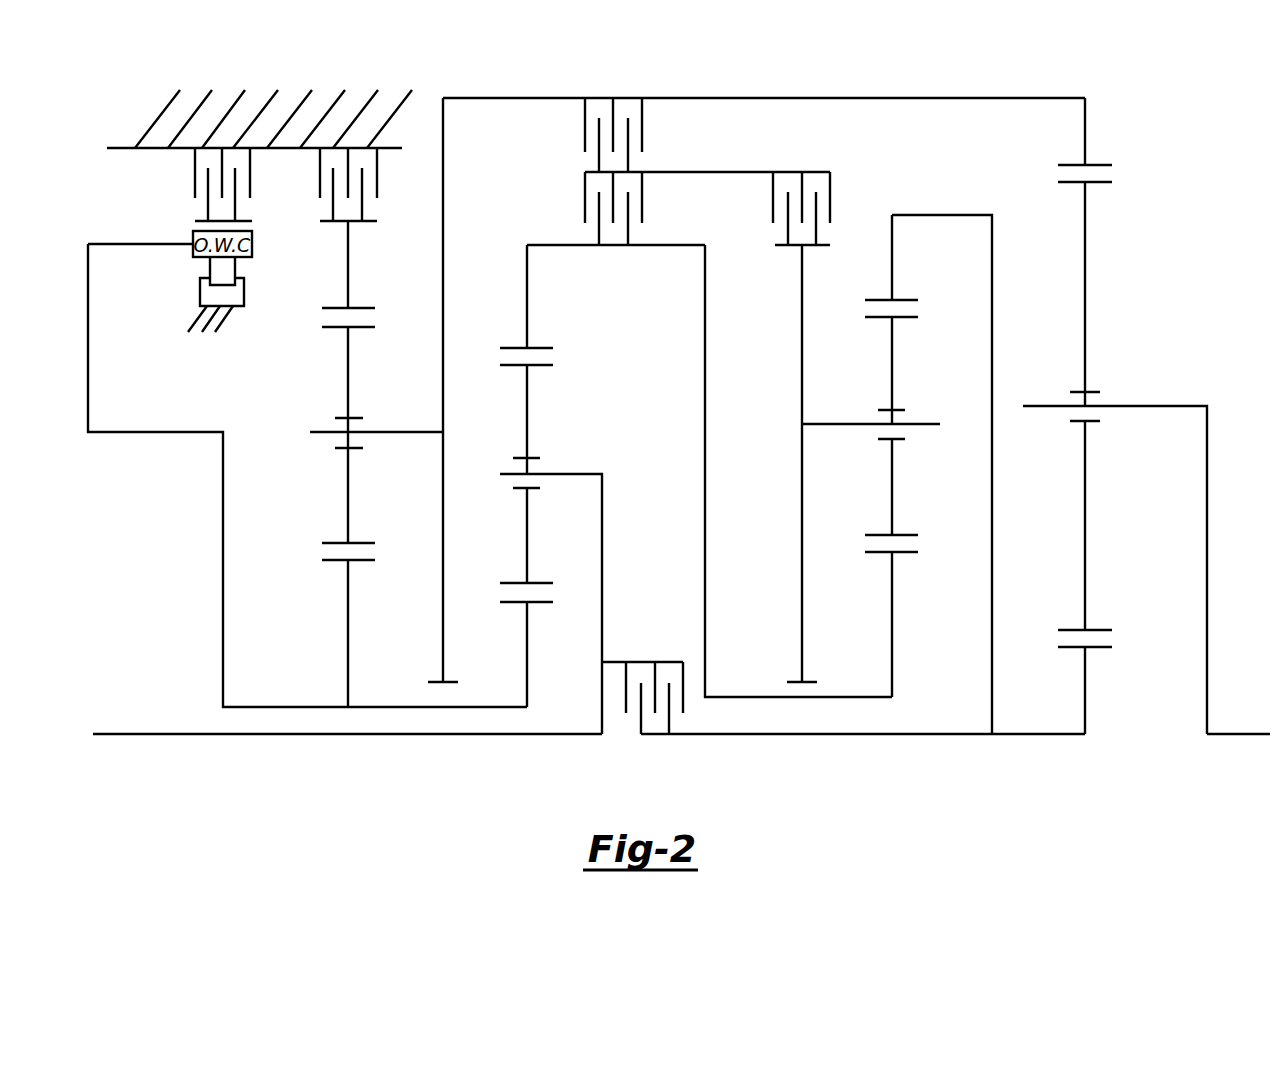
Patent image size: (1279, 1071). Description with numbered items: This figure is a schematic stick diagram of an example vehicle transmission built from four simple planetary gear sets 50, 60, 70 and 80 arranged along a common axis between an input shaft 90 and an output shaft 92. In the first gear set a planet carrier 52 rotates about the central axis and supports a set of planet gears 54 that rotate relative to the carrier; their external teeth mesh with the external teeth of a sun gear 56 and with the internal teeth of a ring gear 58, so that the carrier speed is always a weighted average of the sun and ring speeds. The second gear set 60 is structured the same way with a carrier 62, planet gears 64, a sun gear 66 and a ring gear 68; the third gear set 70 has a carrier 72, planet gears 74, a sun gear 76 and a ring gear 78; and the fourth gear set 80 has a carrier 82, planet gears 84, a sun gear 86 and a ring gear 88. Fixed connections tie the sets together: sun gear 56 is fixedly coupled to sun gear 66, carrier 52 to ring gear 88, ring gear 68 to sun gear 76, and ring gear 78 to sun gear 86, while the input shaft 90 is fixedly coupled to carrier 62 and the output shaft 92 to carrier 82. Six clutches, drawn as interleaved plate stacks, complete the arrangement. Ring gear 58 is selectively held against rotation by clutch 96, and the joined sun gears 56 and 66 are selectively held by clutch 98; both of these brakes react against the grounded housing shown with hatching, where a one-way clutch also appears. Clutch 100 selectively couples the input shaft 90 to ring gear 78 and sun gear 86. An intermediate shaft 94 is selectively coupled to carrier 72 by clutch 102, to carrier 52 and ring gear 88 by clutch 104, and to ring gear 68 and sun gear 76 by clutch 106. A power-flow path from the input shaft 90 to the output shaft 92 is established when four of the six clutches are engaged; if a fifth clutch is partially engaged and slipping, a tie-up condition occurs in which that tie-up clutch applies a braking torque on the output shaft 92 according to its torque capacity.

The planetary gear set 50 is at (333, 790).
The planet carrier 52 is at (443, 258).
The planet gears 54 is at (348, 372).
The sun gear 56 is at (348, 633).
The ring gear 58 is at (348, 264).
The planetary gear set 60 is at (515, 790).
The carrier 62 is at (602, 550).
The planet gears 64 is at (527, 412).
The sun gear 66 is at (527, 655).
The ring gear 68 is at (527, 297).
The planetary gear set 70 is at (878, 790).
The carrier 72 is at (802, 403).
The planet gears 74 is at (892, 363).
The sun gear 76 is at (892, 625).
The ring gear 78 is at (892, 258).
The planetary gear set 80 is at (1071, 790).
The carrier 82 is at (1158, 406).
The planet gears 84 is at (1085, 288).
The sun gear 86 is at (1085, 692).
The ring gear 88 is at (1085, 132).
The input shaft 90 is at (155, 735).
The output shaft 92 is at (1250, 735).
The intermediate shaft 94 is at (708, 172).
The clutch 96 is at (320, 174).
The clutch 98 is at (195, 174).
The clutch 100 is at (637, 662).
The clutch 102 is at (780, 172).
The clutch 104 is at (585, 127).
The clutch 106 is at (585, 198).